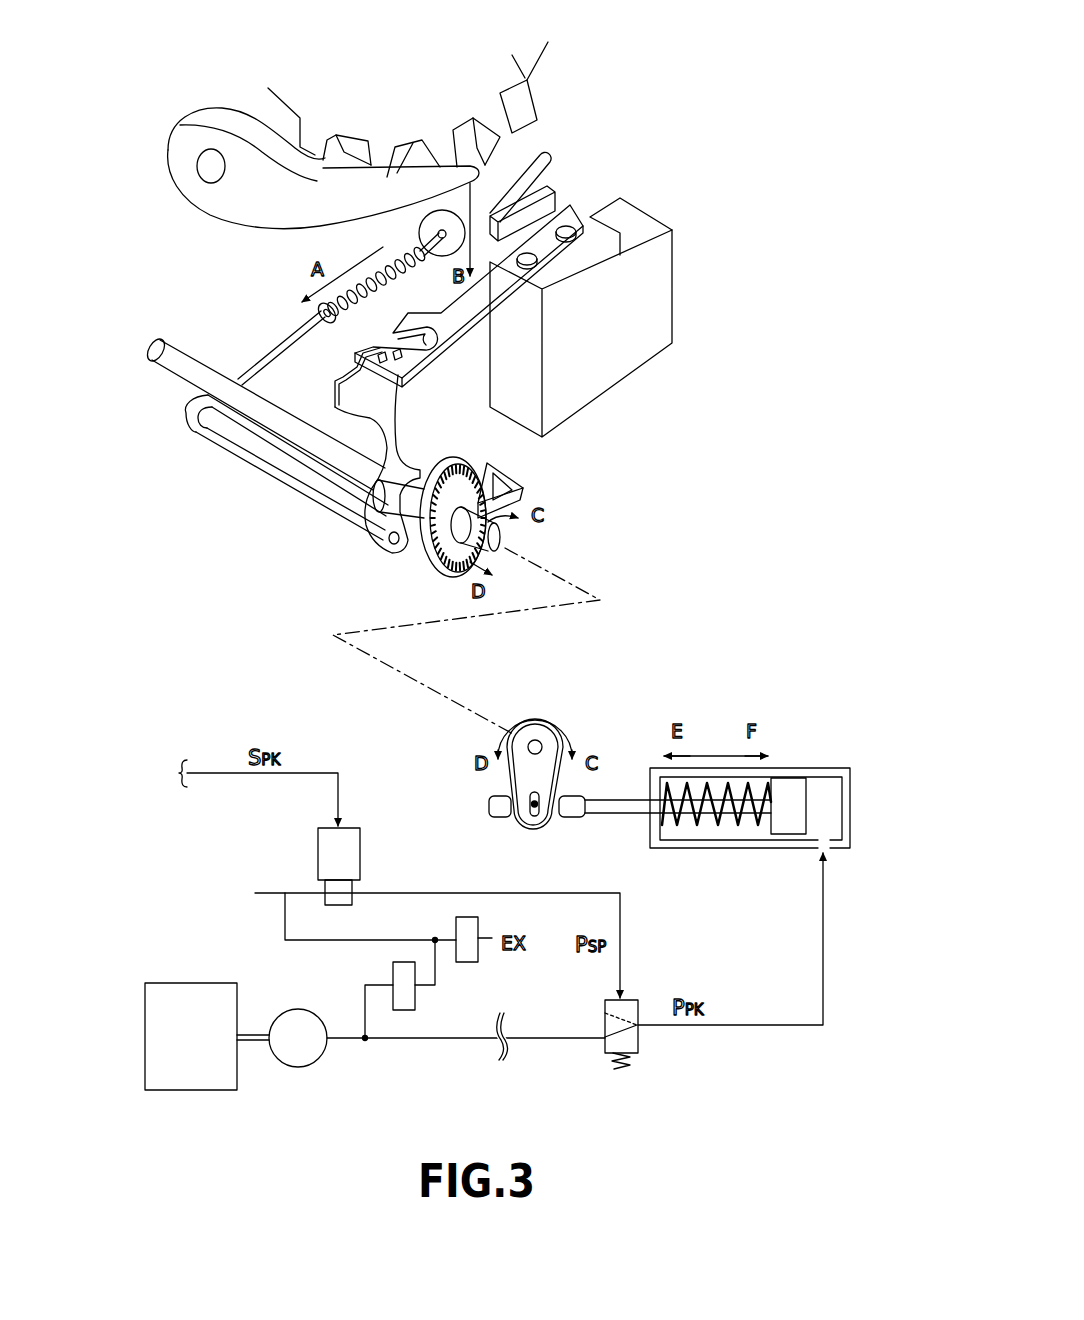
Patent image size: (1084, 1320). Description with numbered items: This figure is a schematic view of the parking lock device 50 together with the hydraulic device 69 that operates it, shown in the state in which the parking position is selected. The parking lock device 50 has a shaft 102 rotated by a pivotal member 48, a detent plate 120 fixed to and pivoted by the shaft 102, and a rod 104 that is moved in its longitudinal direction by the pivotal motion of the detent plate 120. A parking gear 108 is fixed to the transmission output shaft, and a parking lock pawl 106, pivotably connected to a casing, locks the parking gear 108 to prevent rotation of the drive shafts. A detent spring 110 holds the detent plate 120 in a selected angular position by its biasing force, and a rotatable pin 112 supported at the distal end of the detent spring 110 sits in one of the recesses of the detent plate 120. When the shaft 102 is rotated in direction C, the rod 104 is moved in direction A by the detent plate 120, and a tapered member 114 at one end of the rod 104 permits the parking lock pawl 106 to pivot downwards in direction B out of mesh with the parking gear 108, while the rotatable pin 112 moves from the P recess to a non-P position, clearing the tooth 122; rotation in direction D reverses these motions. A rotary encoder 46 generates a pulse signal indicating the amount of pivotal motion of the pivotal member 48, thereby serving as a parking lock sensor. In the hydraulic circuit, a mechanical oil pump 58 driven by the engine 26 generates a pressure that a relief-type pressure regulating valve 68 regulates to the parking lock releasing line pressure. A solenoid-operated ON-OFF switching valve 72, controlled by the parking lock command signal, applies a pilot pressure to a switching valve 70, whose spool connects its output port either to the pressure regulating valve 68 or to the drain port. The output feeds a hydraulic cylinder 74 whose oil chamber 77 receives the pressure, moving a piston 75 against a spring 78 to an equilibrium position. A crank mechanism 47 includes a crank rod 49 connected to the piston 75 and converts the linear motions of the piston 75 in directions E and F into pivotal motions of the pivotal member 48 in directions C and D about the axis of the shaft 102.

The parking lock device 50 is at (690, 96).
The parking gear 108 is at (515, 57).
The parking lock pawl 106 is at (232, 195).
The rod 104 is at (283, 347).
The tapered member 114 is at (480, 213).
The detent spring 110 is at (481, 305).
The rotatable pin 112 is at (392, 353).
The tooth 122 is at (330, 390).
The shaft 102 is at (178, 363).
The detent plate 120 is at (395, 443).
The rotary encoder 46 is at (514, 470).
The hydraulic device 69 is at (704, 622).
The crank mechanism 47 is at (634, 682).
The hydraulic cylinder 74 is at (756, 780).
The oil chamber 77 is at (827, 790).
The pivotal member 48 is at (520, 783).
The crank rod 49 is at (615, 807).
The spring 78 is at (733, 820).
The piston 75 is at (790, 830).
The ON-OFF switching valve 72 is at (352, 845).
The engine 26 is at (233, 995).
The mechanical oil pump 58 is at (300, 1012).
The pressure regulating valve 68 is at (404, 997).
The switching valve 70 is at (592, 1080).